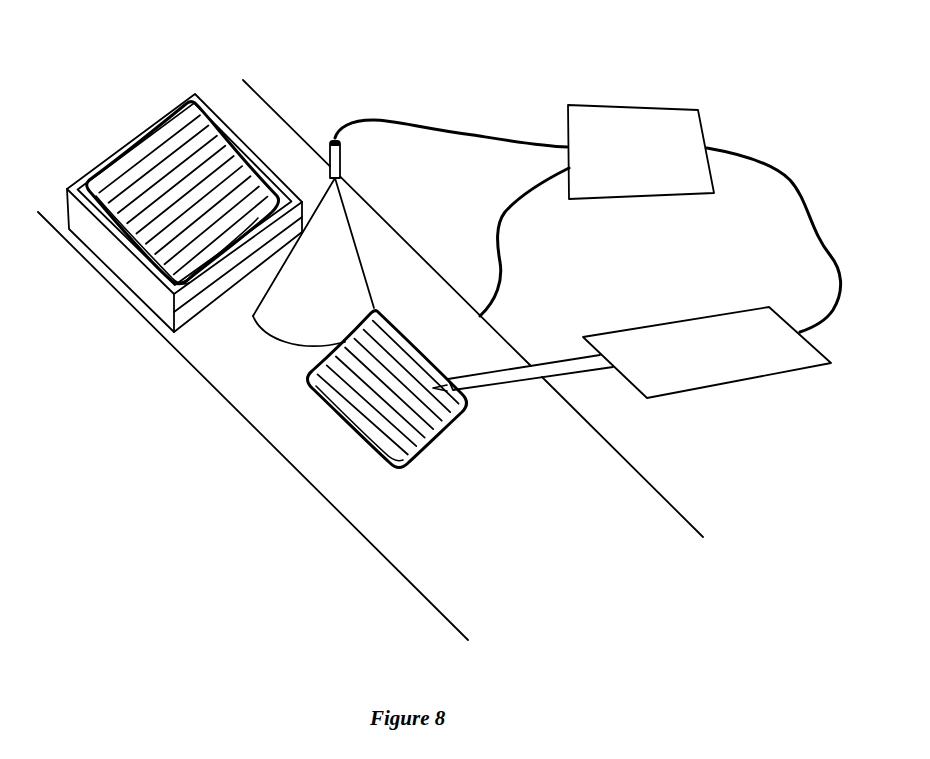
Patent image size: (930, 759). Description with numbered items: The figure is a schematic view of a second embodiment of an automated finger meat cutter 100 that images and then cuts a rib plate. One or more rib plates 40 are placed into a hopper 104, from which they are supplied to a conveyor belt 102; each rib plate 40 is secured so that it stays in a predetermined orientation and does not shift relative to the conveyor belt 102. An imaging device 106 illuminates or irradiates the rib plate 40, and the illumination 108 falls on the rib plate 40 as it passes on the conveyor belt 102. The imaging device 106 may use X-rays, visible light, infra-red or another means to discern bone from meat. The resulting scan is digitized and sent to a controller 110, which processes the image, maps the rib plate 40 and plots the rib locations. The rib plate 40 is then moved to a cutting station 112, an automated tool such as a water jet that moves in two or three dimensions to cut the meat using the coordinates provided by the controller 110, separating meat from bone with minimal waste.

The rib plate 40 is at (185, 143).
The automated finger meat cutter 100 is at (758, 489).
The conveyor belt 102 is at (412, 549).
The hopper 104 is at (212, 110).
The imaging device 106 is at (334, 140).
The scan beam cone 108 is at (323, 258).
The controller 110 is at (702, 113).
The cutting station 112 is at (762, 362).